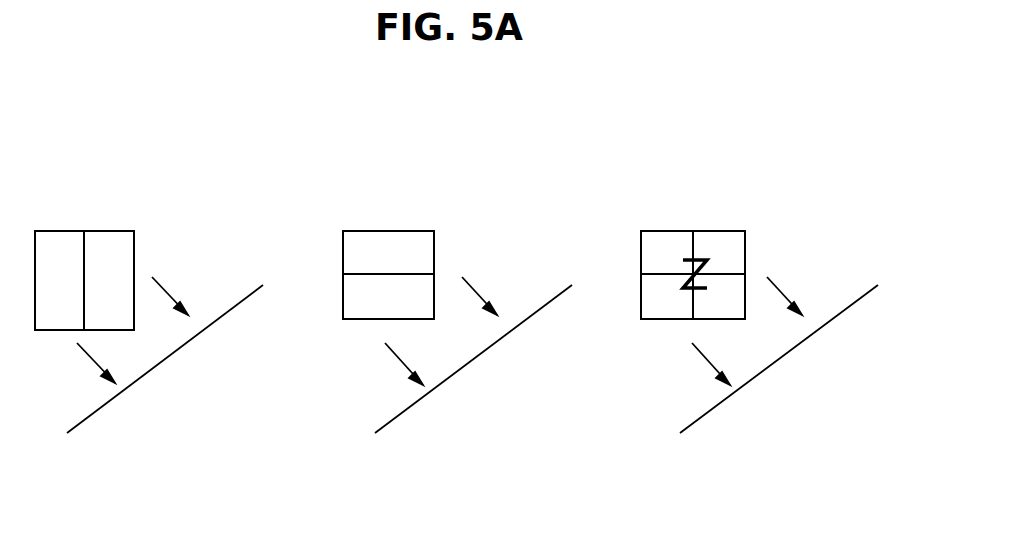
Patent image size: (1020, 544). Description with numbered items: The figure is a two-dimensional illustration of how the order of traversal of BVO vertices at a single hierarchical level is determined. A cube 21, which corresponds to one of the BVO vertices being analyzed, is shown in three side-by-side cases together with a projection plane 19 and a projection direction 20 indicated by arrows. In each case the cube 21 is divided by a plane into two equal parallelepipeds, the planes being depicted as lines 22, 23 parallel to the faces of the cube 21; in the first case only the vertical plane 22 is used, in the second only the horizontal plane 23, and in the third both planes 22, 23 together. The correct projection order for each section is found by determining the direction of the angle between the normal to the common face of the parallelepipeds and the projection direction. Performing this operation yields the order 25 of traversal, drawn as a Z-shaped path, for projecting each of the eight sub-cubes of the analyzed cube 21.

The projection plane 19 is at (242, 298).
The projection direction 20 is at (173, 300).
The cube 21 is at (61, 231).
The dividing plane 22 is at (87, 252).
The dividing plane 23 is at (420, 274).
The order of traversal 25 is at (678, 287).